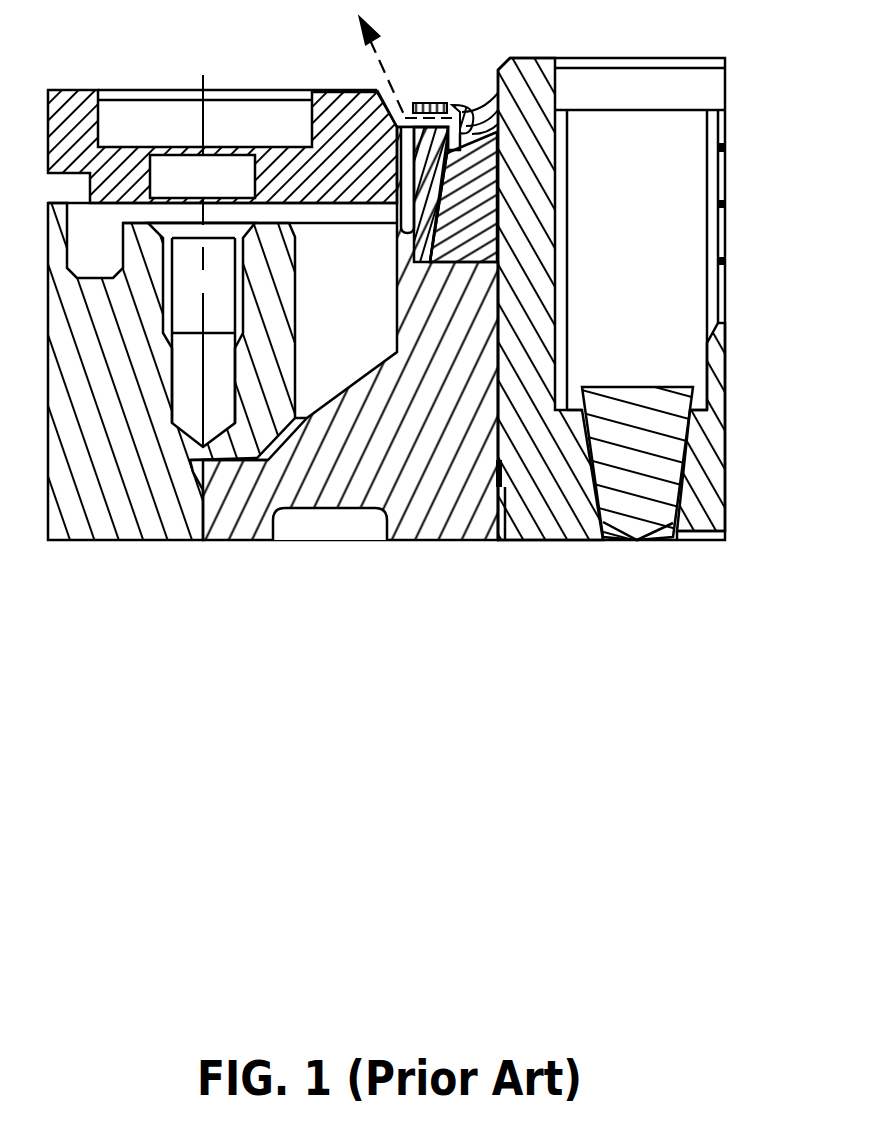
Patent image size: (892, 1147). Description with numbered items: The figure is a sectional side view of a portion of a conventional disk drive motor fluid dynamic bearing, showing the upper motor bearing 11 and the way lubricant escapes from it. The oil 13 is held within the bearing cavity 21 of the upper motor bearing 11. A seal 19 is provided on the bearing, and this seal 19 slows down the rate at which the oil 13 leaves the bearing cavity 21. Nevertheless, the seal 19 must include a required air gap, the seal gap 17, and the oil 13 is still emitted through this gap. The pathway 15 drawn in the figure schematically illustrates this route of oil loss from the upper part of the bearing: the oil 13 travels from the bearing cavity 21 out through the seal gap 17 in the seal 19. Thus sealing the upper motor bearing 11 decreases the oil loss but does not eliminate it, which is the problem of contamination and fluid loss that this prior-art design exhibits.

The upper motor bearing 11 is at (500, 245).
The oil 13 is at (480, 198).
The pathway 15 is at (370, 47).
The seal gap 17 is at (410, 103).
The seal 19 is at (452, 105).
The bearing cavity 21 is at (472, 128).